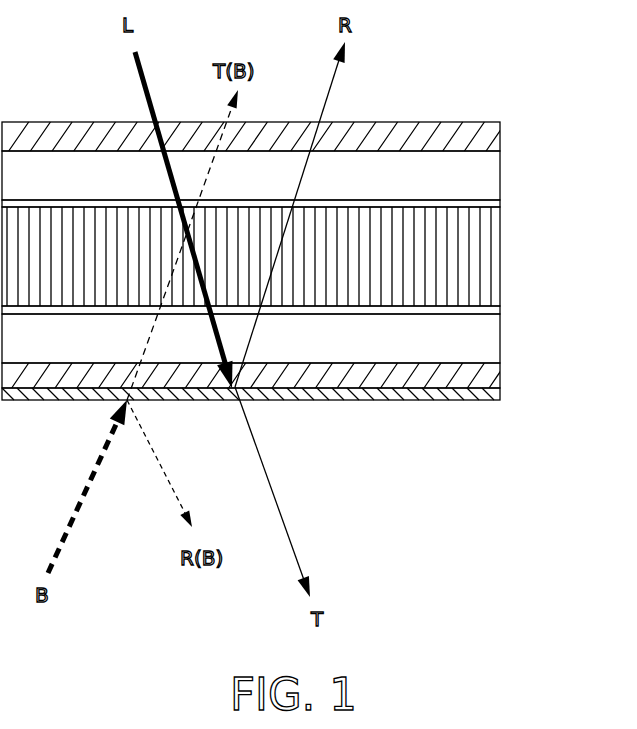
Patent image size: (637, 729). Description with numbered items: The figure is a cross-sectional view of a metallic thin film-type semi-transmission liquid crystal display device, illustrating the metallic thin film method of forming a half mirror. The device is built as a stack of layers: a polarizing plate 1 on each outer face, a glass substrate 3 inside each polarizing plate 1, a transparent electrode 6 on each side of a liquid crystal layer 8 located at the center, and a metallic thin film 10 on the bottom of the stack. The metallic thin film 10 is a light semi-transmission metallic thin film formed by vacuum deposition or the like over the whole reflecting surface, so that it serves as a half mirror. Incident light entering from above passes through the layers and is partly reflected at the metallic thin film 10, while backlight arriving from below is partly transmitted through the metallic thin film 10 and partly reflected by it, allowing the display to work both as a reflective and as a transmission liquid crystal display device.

The polarizing plate 1 is at (500, 135).
The glass substrate 3 is at (493, 176).
The transparent electrode 6 is at (497, 207).
The liquid crystal layer 8 is at (490, 257).
The metallic thin film 10 is at (490, 397).